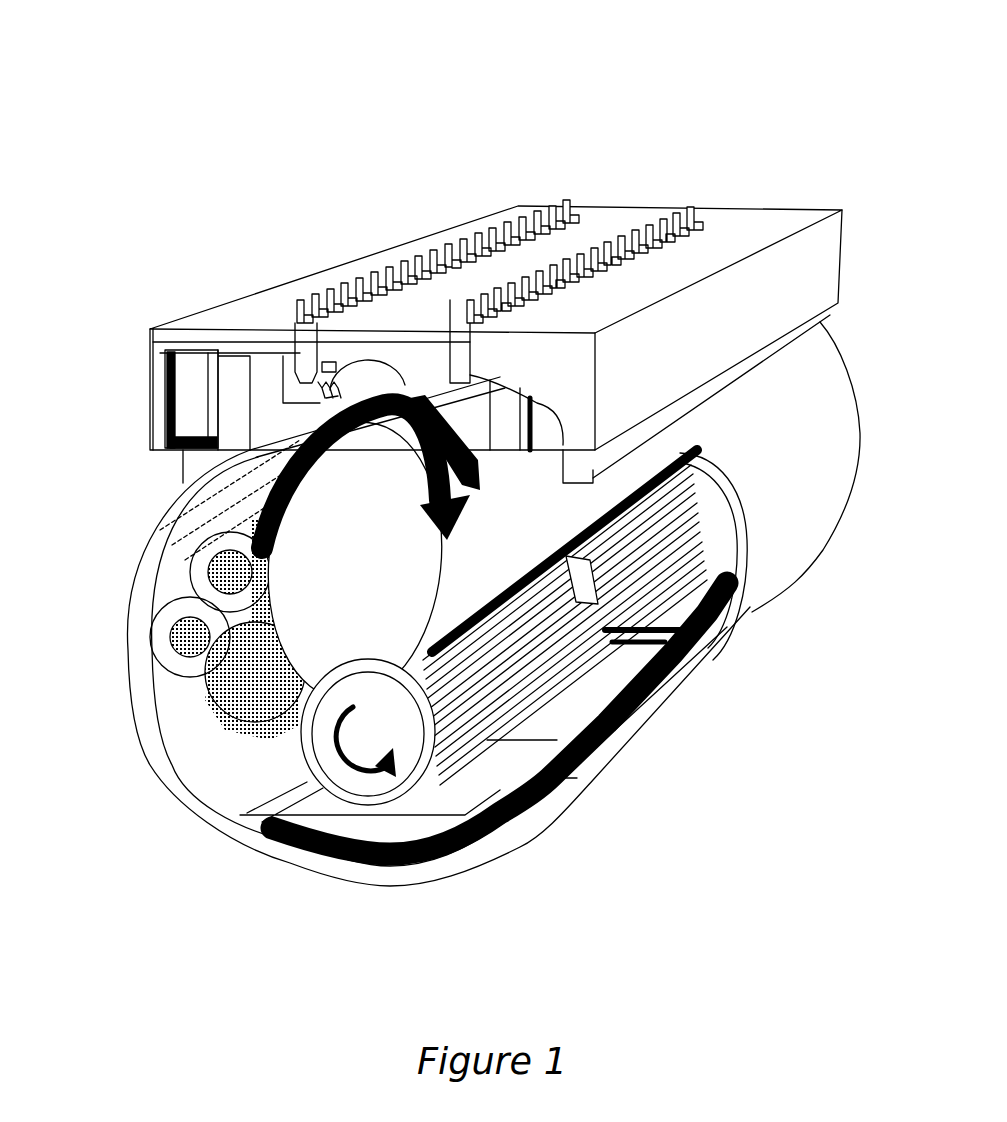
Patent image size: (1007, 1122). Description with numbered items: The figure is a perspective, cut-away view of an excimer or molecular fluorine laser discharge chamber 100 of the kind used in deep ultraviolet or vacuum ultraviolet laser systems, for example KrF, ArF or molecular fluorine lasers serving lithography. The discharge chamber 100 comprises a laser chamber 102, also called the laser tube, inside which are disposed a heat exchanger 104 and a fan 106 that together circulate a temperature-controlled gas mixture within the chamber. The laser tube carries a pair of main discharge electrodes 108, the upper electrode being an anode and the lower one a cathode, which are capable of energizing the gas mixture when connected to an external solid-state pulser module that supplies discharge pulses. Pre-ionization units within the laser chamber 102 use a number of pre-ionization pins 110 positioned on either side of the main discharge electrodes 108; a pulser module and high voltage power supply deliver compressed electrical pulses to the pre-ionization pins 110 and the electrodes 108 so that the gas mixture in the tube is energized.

The laser discharge chamber 100 is at (737, 100).
The laser chamber 102 is at (783, 537).
The heat exchanger 104 is at (168, 660).
The fan 106 is at (533, 670).
The main discharge electrodes 108 is at (367, 362).
The pre-ionization pins 110 is at (310, 327).